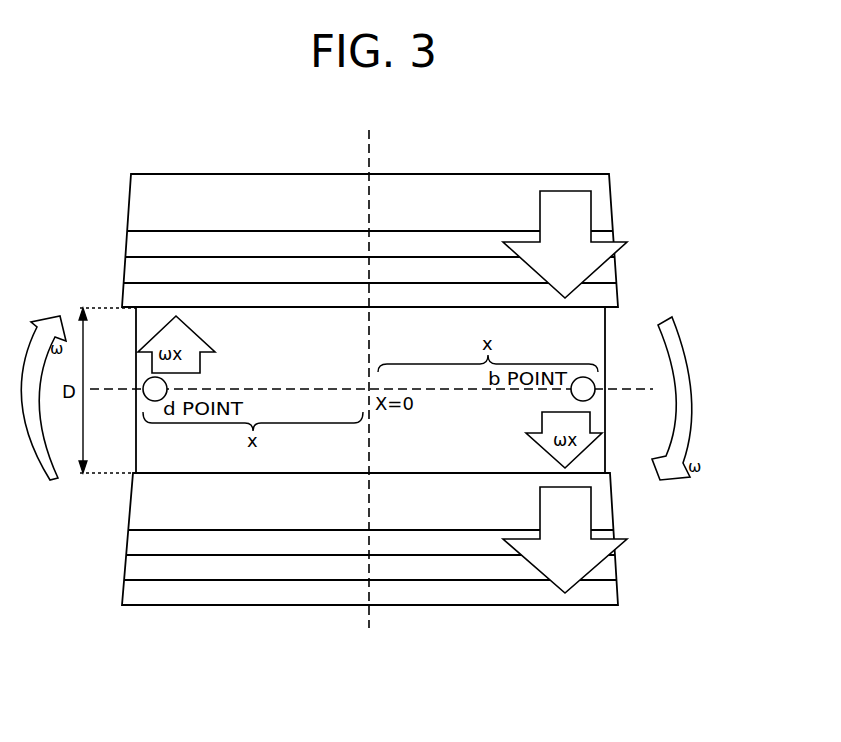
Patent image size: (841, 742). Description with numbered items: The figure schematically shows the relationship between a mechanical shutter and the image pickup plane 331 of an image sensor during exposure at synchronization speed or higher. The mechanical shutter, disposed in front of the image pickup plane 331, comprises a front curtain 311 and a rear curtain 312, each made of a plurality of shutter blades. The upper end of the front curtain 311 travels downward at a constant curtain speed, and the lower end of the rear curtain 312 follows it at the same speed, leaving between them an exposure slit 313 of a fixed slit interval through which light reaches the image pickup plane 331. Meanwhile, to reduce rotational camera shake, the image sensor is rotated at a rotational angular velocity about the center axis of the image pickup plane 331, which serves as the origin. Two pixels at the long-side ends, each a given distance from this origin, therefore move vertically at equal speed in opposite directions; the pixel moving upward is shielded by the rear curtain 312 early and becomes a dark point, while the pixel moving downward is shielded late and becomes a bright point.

The front curtain 311 is at (140, 513).
The rear curtain 312 is at (140, 200).
The exposure slit 313 is at (616, 337).
The image pickup plane 331 is at (597, 462).